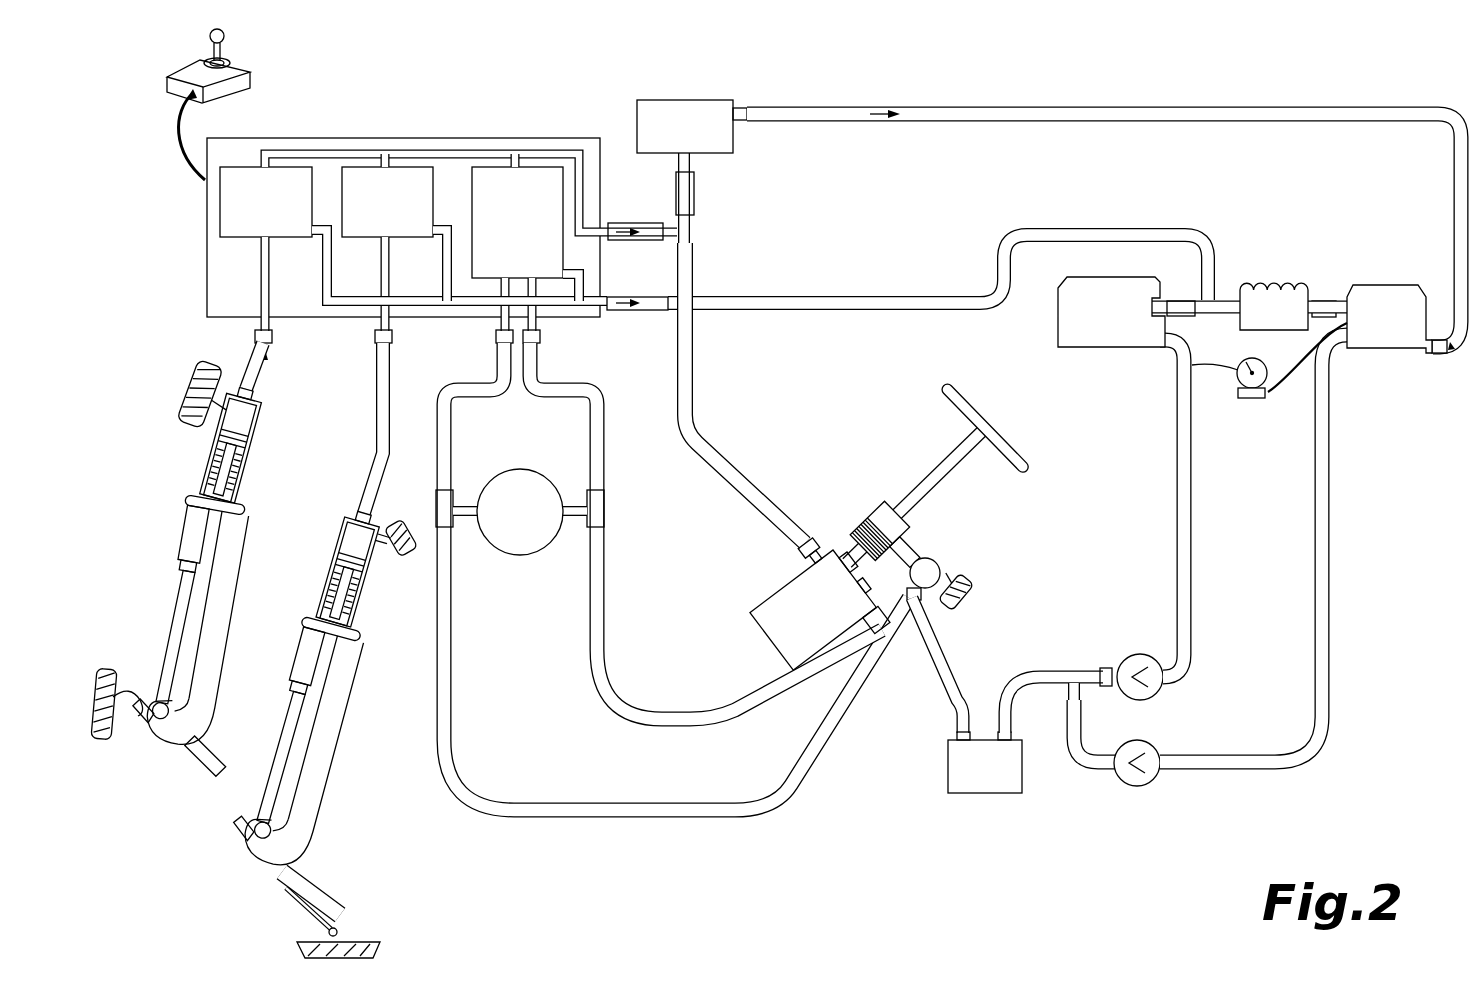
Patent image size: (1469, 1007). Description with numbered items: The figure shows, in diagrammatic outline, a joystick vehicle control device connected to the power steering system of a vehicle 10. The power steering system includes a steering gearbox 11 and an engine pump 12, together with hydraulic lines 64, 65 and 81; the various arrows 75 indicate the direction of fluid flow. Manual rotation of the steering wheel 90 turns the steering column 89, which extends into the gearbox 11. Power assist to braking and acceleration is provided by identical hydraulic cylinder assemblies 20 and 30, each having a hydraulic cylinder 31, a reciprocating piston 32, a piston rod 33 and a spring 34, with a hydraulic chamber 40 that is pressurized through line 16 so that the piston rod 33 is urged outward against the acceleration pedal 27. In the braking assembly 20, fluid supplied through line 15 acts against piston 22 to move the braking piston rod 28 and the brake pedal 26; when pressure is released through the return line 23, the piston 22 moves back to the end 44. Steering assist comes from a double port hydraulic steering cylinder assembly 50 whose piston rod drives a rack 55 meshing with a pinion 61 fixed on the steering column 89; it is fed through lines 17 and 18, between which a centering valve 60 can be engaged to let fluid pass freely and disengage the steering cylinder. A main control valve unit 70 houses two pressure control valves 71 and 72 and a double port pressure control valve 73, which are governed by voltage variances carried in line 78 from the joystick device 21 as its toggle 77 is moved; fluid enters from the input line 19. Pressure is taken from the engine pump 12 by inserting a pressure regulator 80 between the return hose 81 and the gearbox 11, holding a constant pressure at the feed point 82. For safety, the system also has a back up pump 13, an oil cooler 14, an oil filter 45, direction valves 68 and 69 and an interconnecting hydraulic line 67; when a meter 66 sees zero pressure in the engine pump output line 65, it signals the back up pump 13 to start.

The vehicle 10 is at (184, 394).
The steering gearbox 11 is at (770, 602).
The engine pump 12 is at (1058, 294).
The back up pump 13 is at (1394, 350).
The oil cooler 14 is at (1280, 282).
The hydraulic line 15 is at (262, 382).
The hydraulic line 16 is at (391, 362).
The hydraulic line 17 is at (602, 452).
The hydraulic line 18 is at (450, 452).
The input line 19 is at (652, 230).
The braking hydraulic cylinder assembly 20 is at (192, 559).
The joystick device 21 is at (227, 57).
The piston 22 is at (228, 448).
The return line 23 is at (662, 314).
The brake pedal 26 is at (185, 748).
The acceleration pedal 27 is at (325, 888).
The braking piston rod 28 is at (192, 572).
The acceleration hydraulic cylinder assembly 30 is at (318, 714).
The hydraulic cylinder 31 is at (346, 572).
The reciprocating piston 32 is at (372, 578).
The piston rod 33 is at (308, 702).
The spring 34 is at (370, 610).
The hydraulic chamber 40 is at (356, 526).
The end 44 is at (236, 388).
The oil filter 45 is at (1022, 790).
The double port hydraulic steering cylinder assembly 50 is at (940, 568).
The rack 55 is at (909, 527).
The centering valve 60 is at (535, 556).
The pinion 61 is at (880, 512).
The input line 64 is at (967, 708).
The engine pump output line 65 is at (1175, 360).
The meter 66 is at (1256, 400).
The interconnecting hydraulic line 67 is at (1329, 400).
The direction valve 68 is at (1136, 656).
The direction valve 69 is at (1136, 786).
The main control valve unit 70 is at (405, 204).
The pressure control valve 71 is at (244, 167).
The pressure control valve 72 is at (416, 167).
The double port pressure control valve 73 is at (546, 167).
The arrows 75 is at (888, 108).
The toggle 77 is at (224, 34).
The line 78 is at (185, 147).
The pressure regulator 80 is at (683, 98).
The return hose 81 is at (768, 108).
The feed point 82 is at (694, 226).
The steering column 89 is at (946, 462).
The steering wheel 90 is at (1012, 448).